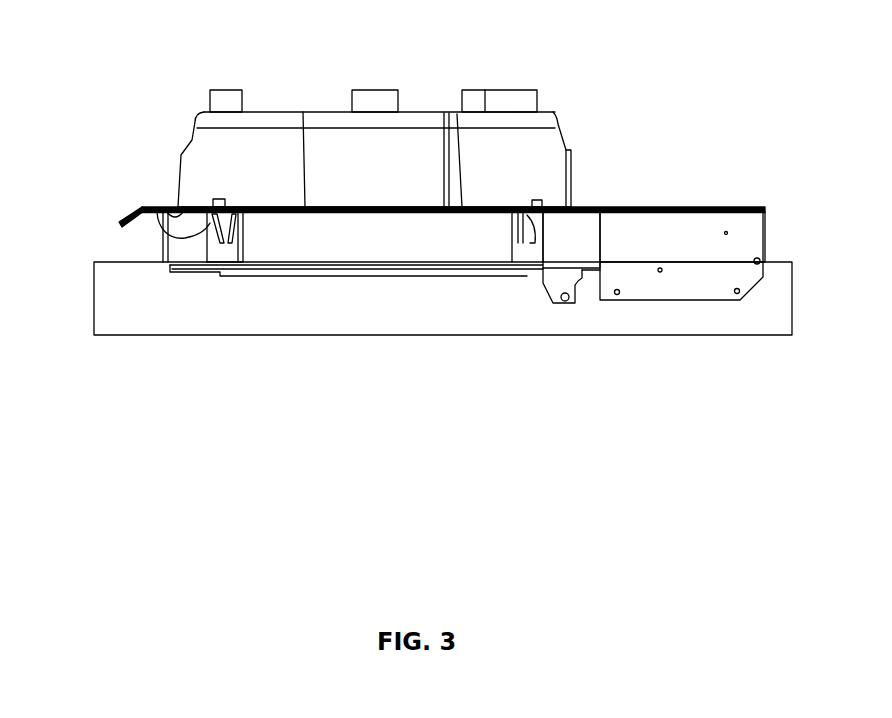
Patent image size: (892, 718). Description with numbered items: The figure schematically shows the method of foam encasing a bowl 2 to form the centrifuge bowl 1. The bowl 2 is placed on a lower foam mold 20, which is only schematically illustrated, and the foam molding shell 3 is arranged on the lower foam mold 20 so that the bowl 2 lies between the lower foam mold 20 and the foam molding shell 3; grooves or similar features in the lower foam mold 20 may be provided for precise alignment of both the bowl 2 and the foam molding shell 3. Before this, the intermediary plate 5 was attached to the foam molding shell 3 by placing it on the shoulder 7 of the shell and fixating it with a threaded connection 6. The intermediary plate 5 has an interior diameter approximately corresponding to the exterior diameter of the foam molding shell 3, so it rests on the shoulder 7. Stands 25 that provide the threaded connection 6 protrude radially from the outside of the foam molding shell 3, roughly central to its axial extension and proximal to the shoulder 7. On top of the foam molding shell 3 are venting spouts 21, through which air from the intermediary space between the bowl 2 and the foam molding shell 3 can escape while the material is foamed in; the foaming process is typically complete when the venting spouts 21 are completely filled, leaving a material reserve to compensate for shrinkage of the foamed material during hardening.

The centrifuge bowl 1 is at (623, 137).
The bowl 2 is at (238, 270).
The foam molding shell 3 is at (517, 147).
The intermediary plate 5 is at (660, 205).
The threaded connection 6 is at (157, 212).
The shoulder 7 is at (163, 207).
The lower foam mold 20 is at (142, 307).
The venting spouts 21 is at (225, 100).
The stands 25 is at (527, 243).